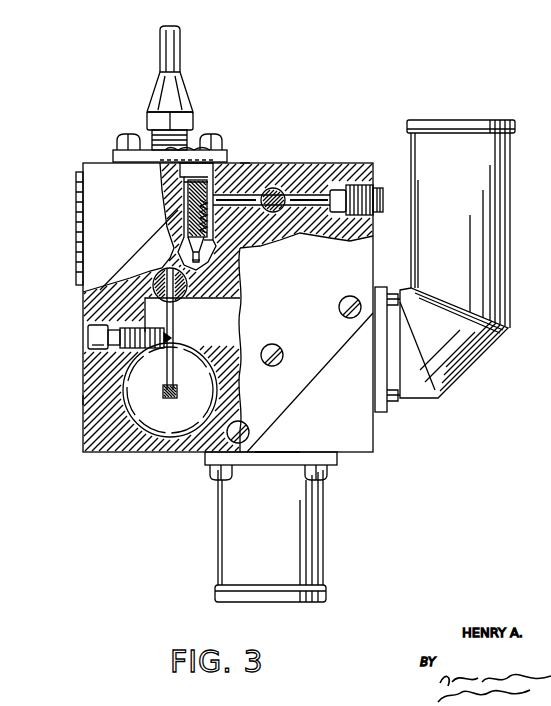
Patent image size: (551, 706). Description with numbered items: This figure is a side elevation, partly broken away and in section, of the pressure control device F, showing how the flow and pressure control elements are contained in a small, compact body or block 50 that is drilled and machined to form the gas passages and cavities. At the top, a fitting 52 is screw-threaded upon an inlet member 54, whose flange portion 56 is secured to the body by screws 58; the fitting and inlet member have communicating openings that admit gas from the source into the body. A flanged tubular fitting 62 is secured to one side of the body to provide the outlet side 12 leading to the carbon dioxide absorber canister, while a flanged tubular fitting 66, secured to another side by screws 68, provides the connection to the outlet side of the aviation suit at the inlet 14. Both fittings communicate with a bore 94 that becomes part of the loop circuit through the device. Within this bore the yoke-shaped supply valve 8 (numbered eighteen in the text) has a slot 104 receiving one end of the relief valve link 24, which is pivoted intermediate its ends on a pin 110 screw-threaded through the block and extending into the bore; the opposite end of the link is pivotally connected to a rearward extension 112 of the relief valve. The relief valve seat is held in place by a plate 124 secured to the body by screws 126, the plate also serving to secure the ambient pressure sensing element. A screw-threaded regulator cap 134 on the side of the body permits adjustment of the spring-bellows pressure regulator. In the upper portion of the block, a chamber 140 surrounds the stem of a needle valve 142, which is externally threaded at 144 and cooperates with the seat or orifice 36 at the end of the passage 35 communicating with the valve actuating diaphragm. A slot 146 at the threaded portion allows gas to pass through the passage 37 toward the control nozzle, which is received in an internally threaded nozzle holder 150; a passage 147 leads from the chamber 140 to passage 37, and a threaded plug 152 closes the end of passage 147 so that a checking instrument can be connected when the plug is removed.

The valve stem rod 8 is at (185, 296).
The outlet side 12 is at (394, 343).
The inlet from suit outlet side 14 is at (280, 447).
The relief valve link 24 is at (168, 381).
The passage 35 is at (206, 258).
The seat or orifice 36 is at (206, 243).
The passage 37 is at (284, 197).
The body or block 50 is at (128, 453).
The fitting 52 is at (180, 85).
The inlet member 54 is at (190, 140).
The flange portion 56 is at (226, 150).
The screws 58 is at (123, 137).
The flanged tubular fitting 62 is at (505, 232).
The flanged tubular fitting 66 is at (324, 540).
The screws 68 is at (212, 470).
The bore 94 is at (225, 318).
The slot 104 is at (163, 271).
The pin 110 is at (178, 336).
The rearward extension 112 is at (170, 398).
The plate 124 is at (312, 367).
The screws 126 is at (338, 303).
The regulator cap 134 is at (80, 200).
The chamber 140 is at (178, 210).
The needle valve 142 is at (195, 206).
The screw-threaded portion 144 is at (184, 238).
The slot 146 is at (306, 243).
The passage 147 is at (245, 168).
The nozzle holder 150 is at (276, 189).
The threaded plug 152 is at (353, 186).
The pressure control device F is at (64, 399).